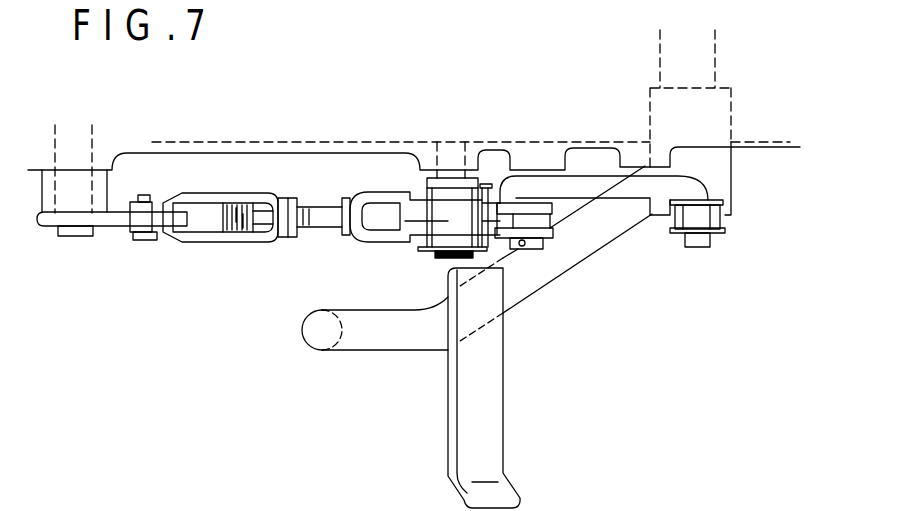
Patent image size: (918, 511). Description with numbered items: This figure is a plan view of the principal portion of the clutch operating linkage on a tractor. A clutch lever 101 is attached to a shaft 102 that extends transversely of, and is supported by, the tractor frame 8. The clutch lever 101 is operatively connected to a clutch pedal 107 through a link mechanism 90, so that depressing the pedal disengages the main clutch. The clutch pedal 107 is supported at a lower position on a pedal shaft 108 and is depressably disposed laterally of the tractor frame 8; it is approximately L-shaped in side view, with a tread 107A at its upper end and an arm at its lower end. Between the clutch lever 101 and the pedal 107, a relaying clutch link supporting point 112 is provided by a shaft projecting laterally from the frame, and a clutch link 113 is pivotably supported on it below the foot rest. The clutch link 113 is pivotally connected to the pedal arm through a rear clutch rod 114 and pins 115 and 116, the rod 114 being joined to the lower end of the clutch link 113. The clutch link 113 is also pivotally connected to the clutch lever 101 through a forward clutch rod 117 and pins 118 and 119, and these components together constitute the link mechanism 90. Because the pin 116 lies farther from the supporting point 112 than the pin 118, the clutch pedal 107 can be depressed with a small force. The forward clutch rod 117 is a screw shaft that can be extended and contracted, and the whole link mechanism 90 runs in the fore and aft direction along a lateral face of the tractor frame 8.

The tractor frame 8 is at (793, 146).
The link mechanism 90 is at (517, 313).
The clutch lever 101 is at (38, 224).
The shaft 102 is at (82, 236).
The clutch pedal 107 is at (393, 357).
The tread 107A is at (490, 447).
The pedal shaft 108 is at (717, 67).
The relaying clutch link supporting point 112 is at (443, 258).
The clutch link 113 is at (497, 203).
The rear clutch rod 114 is at (593, 183).
The pin 115 is at (702, 247).
The pin 116 is at (537, 245).
The forward clutch rod 117 is at (273, 242).
The pin 118 is at (418, 202).
The pin 119 is at (147, 240).